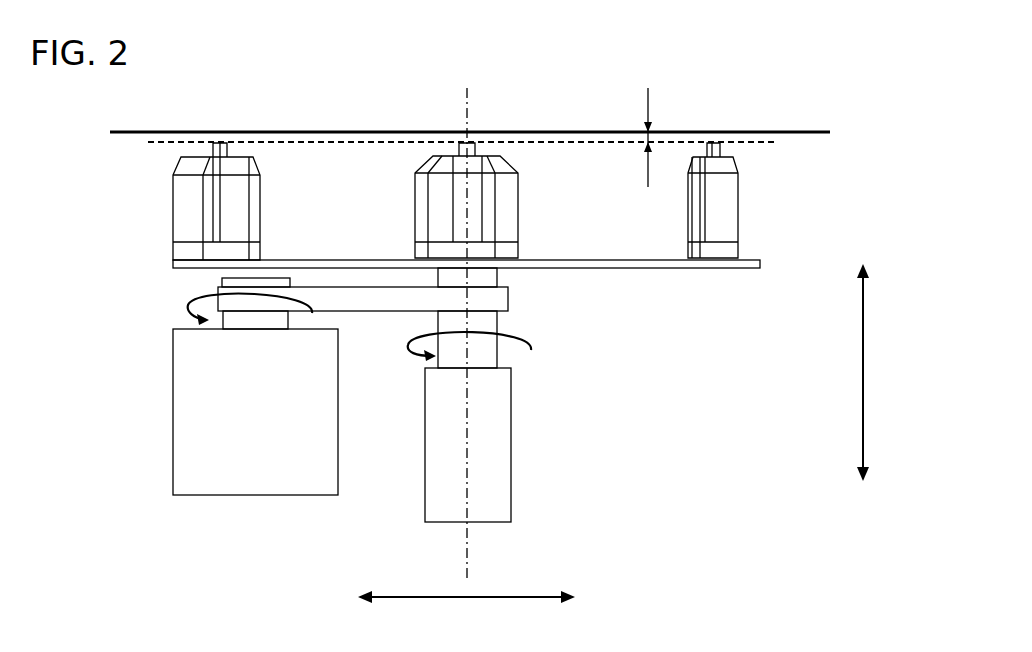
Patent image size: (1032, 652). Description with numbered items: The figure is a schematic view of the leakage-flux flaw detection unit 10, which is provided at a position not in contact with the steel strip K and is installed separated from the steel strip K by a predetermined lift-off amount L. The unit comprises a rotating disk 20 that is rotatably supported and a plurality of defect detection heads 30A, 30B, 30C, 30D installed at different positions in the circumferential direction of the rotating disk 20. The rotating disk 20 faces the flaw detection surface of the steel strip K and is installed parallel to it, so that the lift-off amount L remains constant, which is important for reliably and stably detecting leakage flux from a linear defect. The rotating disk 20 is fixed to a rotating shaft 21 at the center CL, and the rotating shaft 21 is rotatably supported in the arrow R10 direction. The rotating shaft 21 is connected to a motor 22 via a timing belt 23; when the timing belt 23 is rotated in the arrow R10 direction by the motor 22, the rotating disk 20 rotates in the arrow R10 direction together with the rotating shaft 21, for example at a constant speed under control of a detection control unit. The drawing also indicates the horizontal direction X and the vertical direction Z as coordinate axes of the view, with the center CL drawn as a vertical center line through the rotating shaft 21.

The leakage-flux flaw detection unit 10 is at (302, 524).
The rotating disk 20 is at (656, 268).
The rotating shaft 21 is at (483, 357).
The motor 22 is at (192, 420).
The timing belt 23 is at (497, 300).
The defect detection head 30A is at (173, 215).
The defect detection head 30B is at (412, 200).
The defect detection head 30C is at (738, 210).
The defect detection head 30D is at (415, 203).
The steel strip K is at (522, 131).
The lift-off amount L is at (646, 133).
The arrow R10 direction R10 is at (408, 350).
The center CL is at (465, 565).
The X axis X is at (466, 610).
The Z axis Z is at (854, 372).